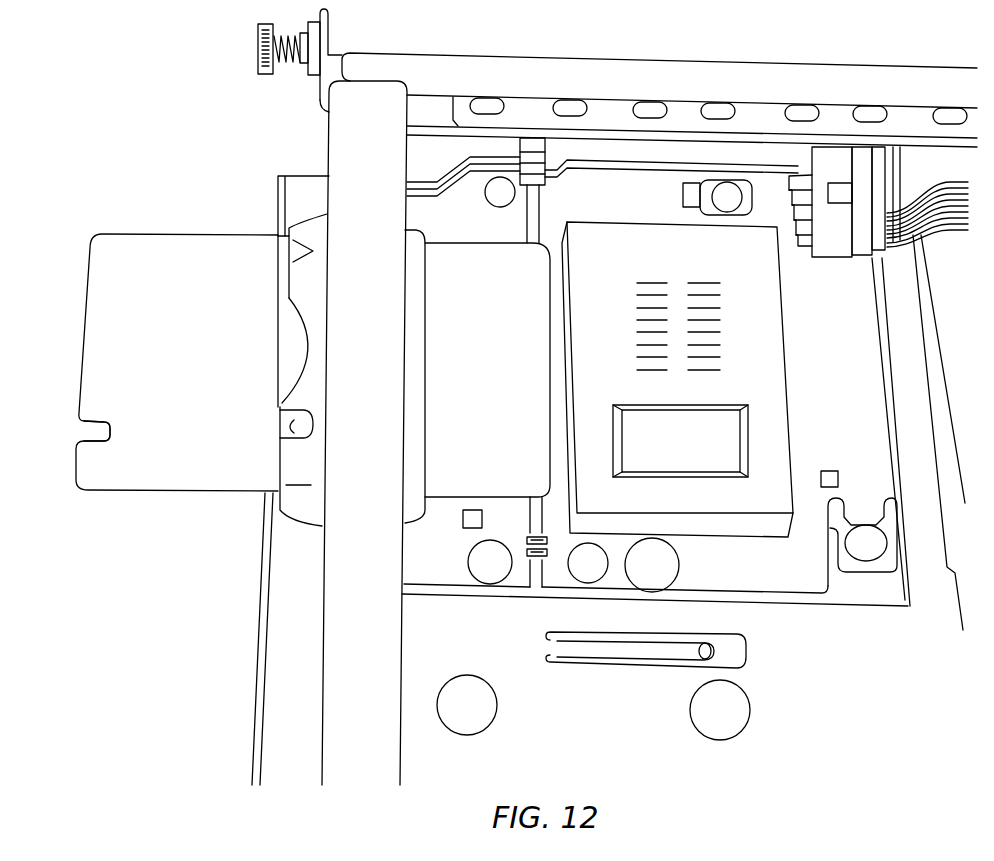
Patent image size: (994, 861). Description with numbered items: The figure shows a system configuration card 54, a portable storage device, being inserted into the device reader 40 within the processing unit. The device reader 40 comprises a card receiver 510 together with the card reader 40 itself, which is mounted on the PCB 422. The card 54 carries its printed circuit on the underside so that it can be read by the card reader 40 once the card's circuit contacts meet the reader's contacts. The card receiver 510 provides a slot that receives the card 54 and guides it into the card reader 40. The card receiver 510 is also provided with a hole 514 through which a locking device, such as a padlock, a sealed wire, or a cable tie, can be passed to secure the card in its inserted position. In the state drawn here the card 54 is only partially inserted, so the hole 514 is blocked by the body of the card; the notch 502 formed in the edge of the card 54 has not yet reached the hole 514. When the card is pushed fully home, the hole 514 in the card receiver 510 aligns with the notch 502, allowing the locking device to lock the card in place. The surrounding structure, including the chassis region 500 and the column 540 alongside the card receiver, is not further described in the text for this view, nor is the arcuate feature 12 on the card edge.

The connector / arcuate tab 12 is at (302, 339).
The device reader 40 is at (705, 529).
The system configuration card 54 is at (165, 384).
The PCB 422 is at (870, 590).
The chassis back panel 500 is at (869, 747).
The notch 502 is at (100, 438).
The card receiver 510 is at (303, 230).
The hole 514 is at (287, 432).
The support column 540 is at (369, 685).